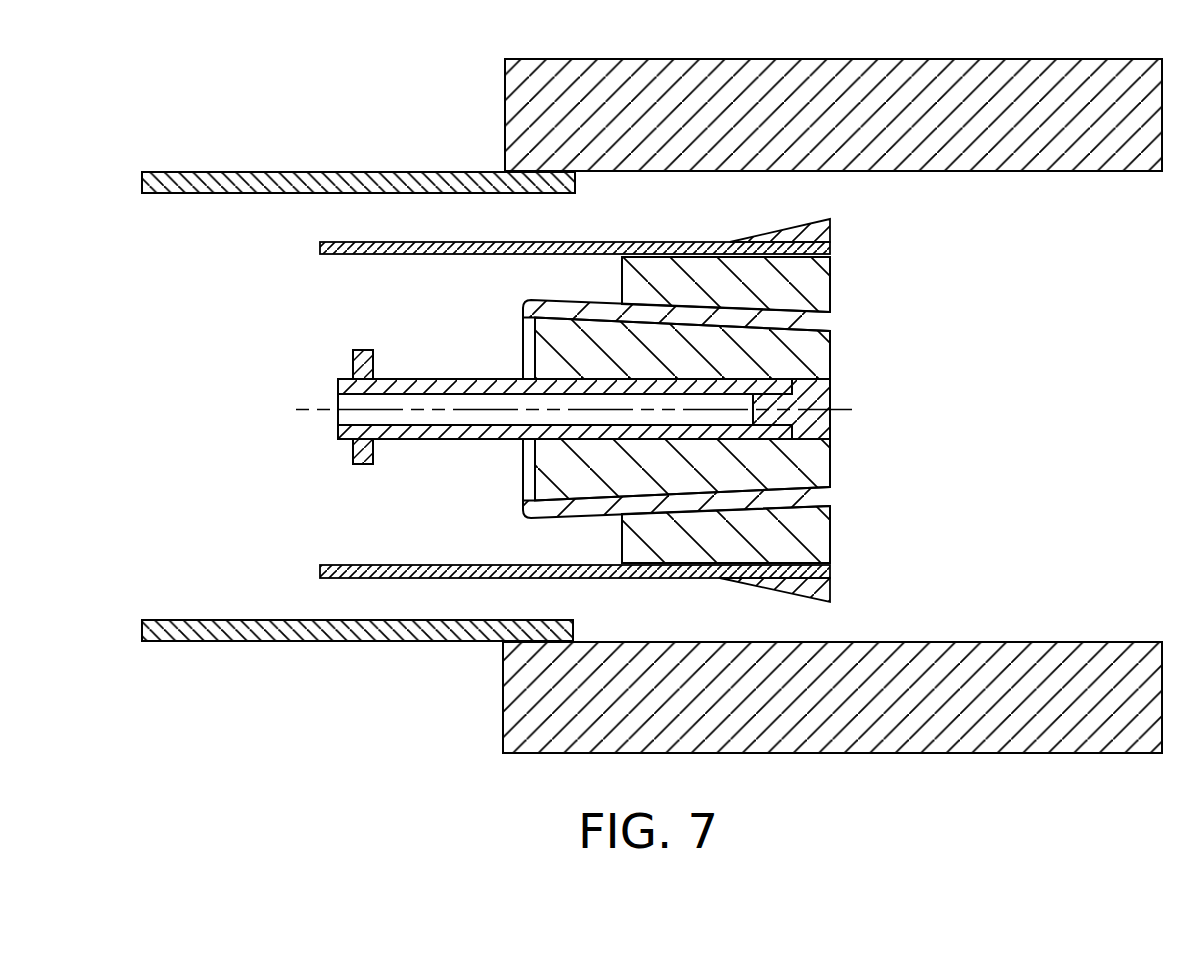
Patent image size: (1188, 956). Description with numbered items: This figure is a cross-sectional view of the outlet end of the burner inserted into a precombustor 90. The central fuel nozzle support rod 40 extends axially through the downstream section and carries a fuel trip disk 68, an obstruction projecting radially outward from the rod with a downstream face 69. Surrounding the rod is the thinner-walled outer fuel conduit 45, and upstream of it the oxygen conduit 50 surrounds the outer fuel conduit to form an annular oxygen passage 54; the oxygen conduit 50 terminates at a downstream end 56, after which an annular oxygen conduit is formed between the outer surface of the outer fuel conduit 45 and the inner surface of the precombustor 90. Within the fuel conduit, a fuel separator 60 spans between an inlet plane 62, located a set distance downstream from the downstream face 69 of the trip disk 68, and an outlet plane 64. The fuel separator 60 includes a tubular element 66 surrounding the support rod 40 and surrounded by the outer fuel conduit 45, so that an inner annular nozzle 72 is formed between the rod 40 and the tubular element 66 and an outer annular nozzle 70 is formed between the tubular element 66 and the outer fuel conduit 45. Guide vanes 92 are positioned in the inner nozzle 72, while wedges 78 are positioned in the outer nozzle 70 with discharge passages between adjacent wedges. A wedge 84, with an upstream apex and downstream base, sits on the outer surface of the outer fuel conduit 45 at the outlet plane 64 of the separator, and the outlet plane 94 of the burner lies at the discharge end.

The central fuel nozzle support rod 40 is at (435, 383).
The thinner-walled outer fuel conduit 45 is at (435, 243).
The oxygen conduit 50 is at (313, 172).
The annular oxygen passage 54 is at (390, 218).
The downstream end 56 is at (578, 179).
The fuel separator 60 is at (512, 499).
The inlet plane 62 is at (505, 468).
The outlet plane 64 is at (840, 462).
The tubular element 66 is at (634, 310).
The fuel trip disk 68 is at (363, 350).
The downstream face 69 is at (375, 368).
The outer annular nozzle 70 is at (588, 272).
The inner annular nozzle 72 is at (505, 332).
The wedges 78 is at (810, 285).
The wedge 84 is at (797, 222).
The precombustor 90 is at (884, 70).
The guide vanes 92 is at (807, 358).
The outlet plane of the burner 94 is at (840, 538).